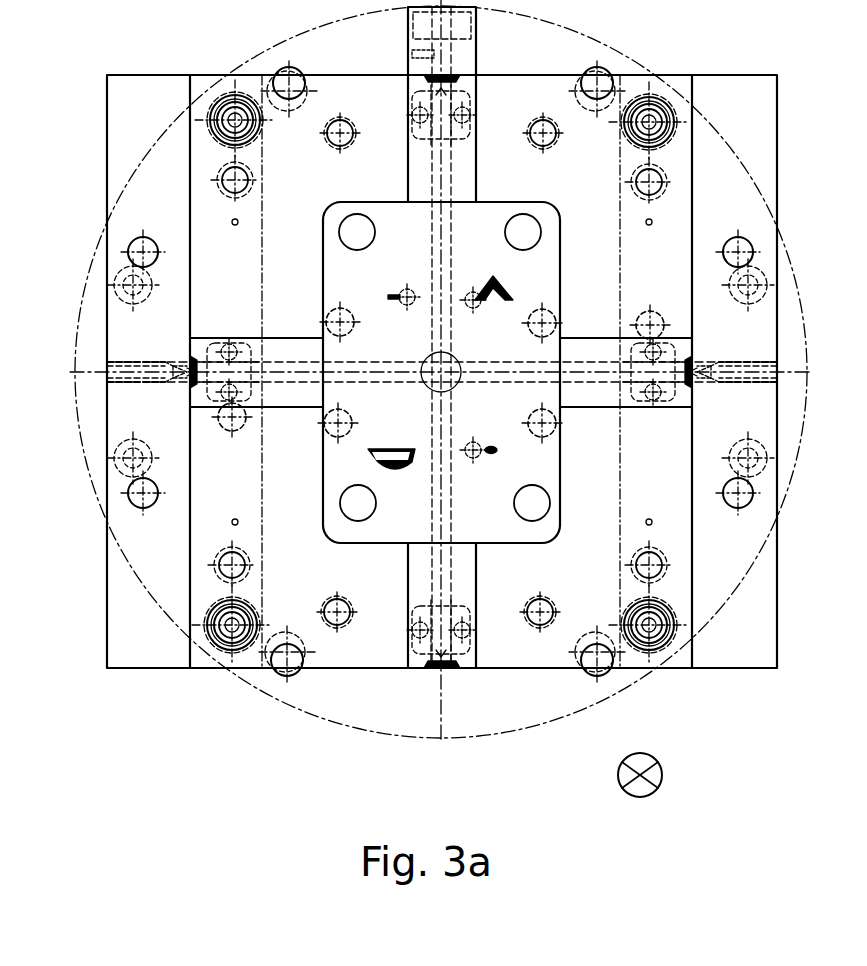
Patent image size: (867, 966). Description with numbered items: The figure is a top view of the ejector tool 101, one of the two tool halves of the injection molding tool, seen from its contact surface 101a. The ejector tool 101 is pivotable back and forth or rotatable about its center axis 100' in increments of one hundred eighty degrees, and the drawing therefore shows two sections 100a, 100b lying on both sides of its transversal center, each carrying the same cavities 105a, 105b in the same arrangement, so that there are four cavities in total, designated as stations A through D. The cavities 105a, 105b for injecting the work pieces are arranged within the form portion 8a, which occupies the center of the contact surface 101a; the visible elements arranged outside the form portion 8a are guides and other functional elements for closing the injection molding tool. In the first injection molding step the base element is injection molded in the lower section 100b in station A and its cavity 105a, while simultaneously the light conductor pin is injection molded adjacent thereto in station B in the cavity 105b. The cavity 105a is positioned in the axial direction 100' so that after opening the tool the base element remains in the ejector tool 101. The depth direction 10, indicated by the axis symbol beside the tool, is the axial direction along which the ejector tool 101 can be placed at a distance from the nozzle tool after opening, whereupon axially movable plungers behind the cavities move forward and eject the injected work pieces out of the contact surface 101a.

The center axis 100' is at (408, 370).
The ejector tool 101 is at (442, 371).
The contact surface 101a is at (441, 371).
The section 100a is at (563, 203).
The section 100b is at (563, 372).
The cavity 105a is at (397, 447).
The cavity 105b is at (490, 447).
The form portion 8a is at (517, 547).
The depth direction 10 is at (640, 775).